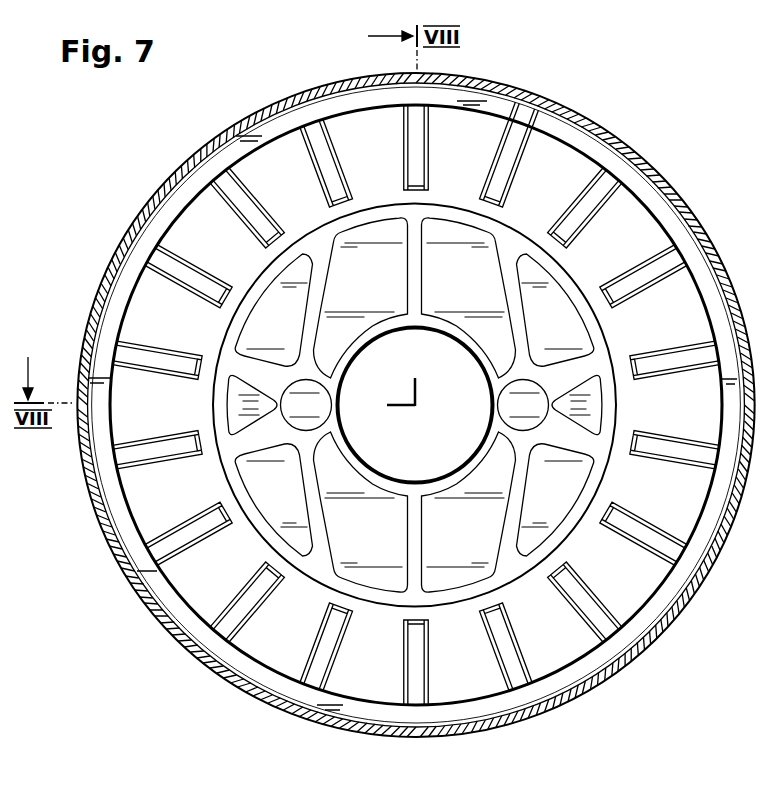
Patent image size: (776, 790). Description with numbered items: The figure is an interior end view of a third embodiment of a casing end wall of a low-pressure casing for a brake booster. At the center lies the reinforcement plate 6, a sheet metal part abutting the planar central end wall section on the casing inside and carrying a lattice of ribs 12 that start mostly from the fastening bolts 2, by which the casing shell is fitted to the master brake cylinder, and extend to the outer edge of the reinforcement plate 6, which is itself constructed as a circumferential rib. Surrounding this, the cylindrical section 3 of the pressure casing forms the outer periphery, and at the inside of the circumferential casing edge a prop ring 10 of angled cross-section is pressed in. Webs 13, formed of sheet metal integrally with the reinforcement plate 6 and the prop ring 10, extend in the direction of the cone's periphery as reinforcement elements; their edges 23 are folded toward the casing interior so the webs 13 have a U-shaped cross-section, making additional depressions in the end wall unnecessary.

The fastening bolt 2 is at (307, 407).
The cylindrical section 3 is at (296, 94).
The reinforcement plate 6 is at (343, 553).
The prop ring 10 is at (251, 135).
The ribs 12 is at (310, 507).
The webs 13 is at (521, 153).
The edges 23 is at (497, 148).